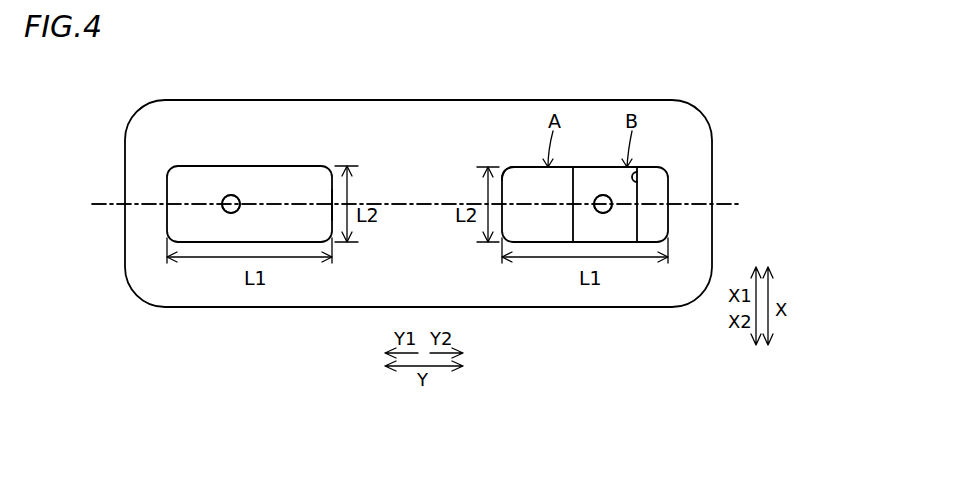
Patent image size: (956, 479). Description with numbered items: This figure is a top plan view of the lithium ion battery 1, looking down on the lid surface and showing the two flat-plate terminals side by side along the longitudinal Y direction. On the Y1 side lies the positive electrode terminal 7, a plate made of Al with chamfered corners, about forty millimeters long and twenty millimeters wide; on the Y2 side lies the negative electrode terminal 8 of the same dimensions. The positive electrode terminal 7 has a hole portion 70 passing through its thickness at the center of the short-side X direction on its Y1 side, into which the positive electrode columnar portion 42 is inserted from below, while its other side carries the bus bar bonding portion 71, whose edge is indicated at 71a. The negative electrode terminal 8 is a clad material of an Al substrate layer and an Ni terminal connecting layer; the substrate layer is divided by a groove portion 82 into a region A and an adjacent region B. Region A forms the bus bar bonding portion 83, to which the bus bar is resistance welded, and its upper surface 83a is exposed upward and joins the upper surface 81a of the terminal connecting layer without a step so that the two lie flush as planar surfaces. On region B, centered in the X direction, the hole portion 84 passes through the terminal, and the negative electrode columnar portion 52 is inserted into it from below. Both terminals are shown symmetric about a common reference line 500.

The housing 1 is at (736, 76).
The positive electrode terminal 7 is at (334, 151).
The negative electrode terminal 8 is at (650, 151).
The hole portion 70 is at (228, 197).
The positive electrode columnar portion 42 is at (233, 195).
The bus bar bonding portion 71 is at (282, 178).
The recess side wall 71a is at (320, 190).
The groove portion 82 is at (649, 166).
The bus bar bonding portion 83 is at (513, 177).
The upper surface of bus bar bonding portion 83a is at (535, 188).
The upper surface of terminal connecting layer 81a is at (578, 183).
The negative electrode columnar portion 52 is at (602, 195).
The hole portion 84 is at (606, 192).
The reference plane 500 is at (112, 204).